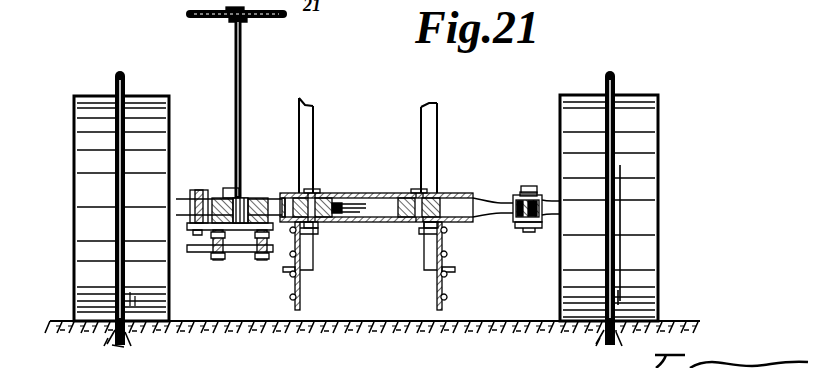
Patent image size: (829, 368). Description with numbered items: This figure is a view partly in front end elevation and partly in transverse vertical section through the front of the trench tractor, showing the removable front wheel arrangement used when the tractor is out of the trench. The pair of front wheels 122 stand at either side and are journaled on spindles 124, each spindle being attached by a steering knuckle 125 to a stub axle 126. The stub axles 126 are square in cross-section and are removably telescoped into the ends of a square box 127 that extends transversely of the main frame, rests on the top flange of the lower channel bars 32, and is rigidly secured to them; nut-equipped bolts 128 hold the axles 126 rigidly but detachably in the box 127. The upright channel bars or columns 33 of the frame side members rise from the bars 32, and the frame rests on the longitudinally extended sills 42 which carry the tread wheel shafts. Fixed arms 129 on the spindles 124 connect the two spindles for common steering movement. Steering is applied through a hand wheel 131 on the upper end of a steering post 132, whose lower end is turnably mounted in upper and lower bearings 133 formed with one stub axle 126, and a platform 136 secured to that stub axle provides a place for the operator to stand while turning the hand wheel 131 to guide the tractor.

The front wheel 122 is at (638, 148).
The spindle 124 is at (187, 197).
The steering knuckle 125 is at (207, 194).
The stub axle 126 is at (320, 208).
The square box 127 is at (348, 210).
The nut-equipped bolt 128 is at (320, 193).
The fixed arm 129 is at (187, 222).
The hand wheel 131 is at (276, 20).
The steering post 132 is at (262, 88).
The bearing 133 is at (250, 193).
The platform 136 is at (200, 252).
The channel bar 32 is at (290, 248).
The upright channel bar 33 is at (300, 130).
The sill 42 is at (300, 293).